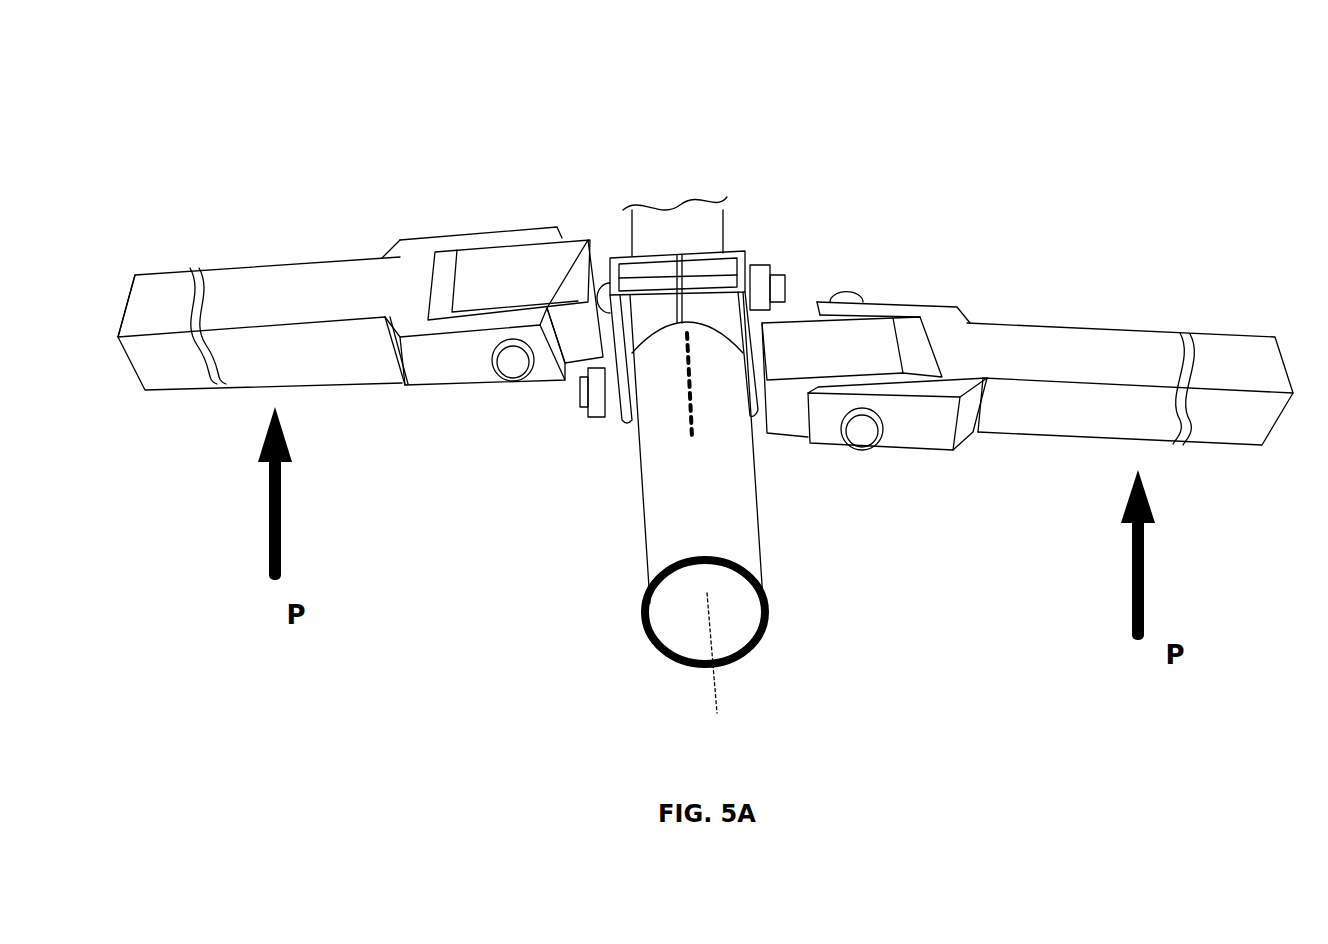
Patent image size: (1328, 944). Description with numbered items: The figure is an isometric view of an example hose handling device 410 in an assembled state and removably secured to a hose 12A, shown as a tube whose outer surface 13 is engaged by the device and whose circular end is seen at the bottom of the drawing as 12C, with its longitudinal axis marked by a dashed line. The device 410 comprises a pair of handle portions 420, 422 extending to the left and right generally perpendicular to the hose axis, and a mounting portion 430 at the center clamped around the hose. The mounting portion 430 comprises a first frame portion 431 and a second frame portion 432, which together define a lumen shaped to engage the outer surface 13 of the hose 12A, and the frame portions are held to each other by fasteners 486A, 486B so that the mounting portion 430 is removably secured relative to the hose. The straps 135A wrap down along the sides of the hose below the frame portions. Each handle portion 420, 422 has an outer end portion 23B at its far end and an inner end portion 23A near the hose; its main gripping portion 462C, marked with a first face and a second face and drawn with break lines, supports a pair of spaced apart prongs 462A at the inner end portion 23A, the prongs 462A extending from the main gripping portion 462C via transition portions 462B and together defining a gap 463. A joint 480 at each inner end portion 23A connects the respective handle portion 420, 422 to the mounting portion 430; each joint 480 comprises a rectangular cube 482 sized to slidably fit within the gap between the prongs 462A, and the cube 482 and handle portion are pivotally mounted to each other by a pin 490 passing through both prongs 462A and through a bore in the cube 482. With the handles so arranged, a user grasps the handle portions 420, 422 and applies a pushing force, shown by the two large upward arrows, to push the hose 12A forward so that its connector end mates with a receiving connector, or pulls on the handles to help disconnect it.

The hose handling device 410 is at (679, 394).
The handle portion 420 is at (631, 352).
The handle portion 422 is at (1245, 336).
The mounting portion 430 is at (679, 317).
The first frame portion 431 is at (651, 252).
The second frame portion 432 is at (752, 259).
The joint 480 is at (676, 326).
The rectangular cube 482 is at (685, 338).
The prongs 462A is at (500, 232).
The transition portions 462B is at (418, 255).
The main gripping portion 462C is at (676, 326).
The gap 463 is at (442, 288).
The fastener 486A is at (705, 287).
The fastener 486B is at (585, 392).
The pin 490 is at (513, 362).
The clamp strap 135A is at (640, 360).
The outer surface 13 is at (694, 455).
The tube end 12C is at (705, 583).
The hose 12A is at (678, 537).
The inner end portion 23A is at (373, 270).
The outer end portion 23B is at (133, 283).